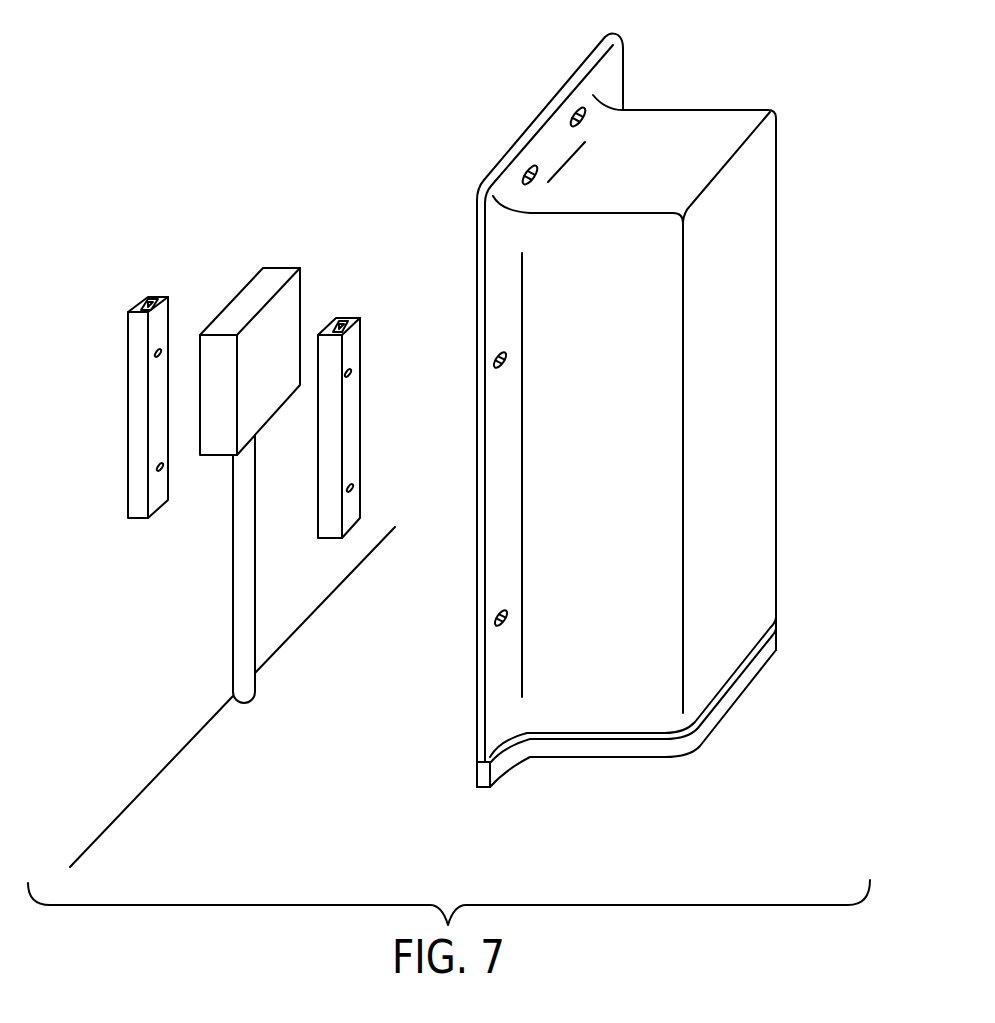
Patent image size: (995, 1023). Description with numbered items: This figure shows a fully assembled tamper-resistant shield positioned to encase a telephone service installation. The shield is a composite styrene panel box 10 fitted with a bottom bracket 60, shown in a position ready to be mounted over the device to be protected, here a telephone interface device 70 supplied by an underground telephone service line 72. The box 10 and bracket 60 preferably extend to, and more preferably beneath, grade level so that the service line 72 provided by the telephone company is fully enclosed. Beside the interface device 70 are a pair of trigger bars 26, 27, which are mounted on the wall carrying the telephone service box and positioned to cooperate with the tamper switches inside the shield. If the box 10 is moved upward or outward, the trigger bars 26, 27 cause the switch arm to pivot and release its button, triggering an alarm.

The composite styrene panel box 10 is at (760, 315).
The bottom bracket 60 is at (612, 753).
The trigger bar 26 is at (137, 342).
The trigger bar 27 is at (352, 418).
The telephone interface device 70 is at (260, 293).
The underground telephone service line 72 is at (242, 572).